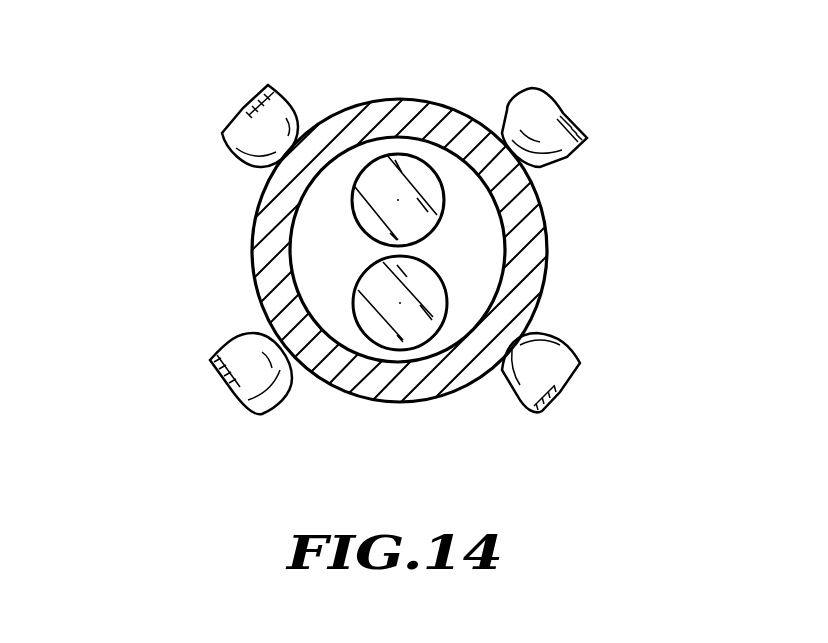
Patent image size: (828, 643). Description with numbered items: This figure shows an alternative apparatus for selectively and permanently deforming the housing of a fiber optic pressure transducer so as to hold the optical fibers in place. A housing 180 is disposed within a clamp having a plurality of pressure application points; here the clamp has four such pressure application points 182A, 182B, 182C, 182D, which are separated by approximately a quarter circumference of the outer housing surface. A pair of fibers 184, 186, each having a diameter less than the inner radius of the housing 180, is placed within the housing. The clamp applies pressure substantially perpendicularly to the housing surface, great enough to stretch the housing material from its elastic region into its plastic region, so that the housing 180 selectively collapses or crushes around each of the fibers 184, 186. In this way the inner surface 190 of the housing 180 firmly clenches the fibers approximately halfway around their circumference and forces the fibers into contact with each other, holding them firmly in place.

The housing 180 is at (548, 250).
The pressure application point 182A is at (519, 397).
The pressure application point 182B is at (518, 89).
The pressure application point 182C is at (280, 37).
The pressure application point 182D is at (227, 347).
The fiber 184 is at (444, 204).
The fiber 186 is at (352, 293).
The inner surface 190 is at (500, 277).